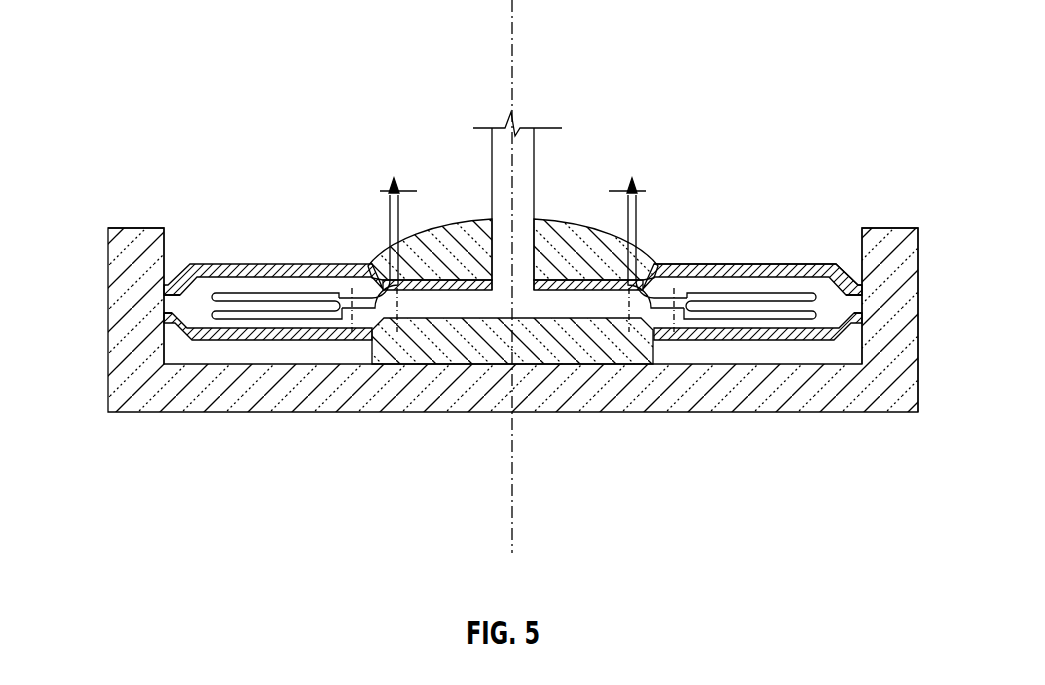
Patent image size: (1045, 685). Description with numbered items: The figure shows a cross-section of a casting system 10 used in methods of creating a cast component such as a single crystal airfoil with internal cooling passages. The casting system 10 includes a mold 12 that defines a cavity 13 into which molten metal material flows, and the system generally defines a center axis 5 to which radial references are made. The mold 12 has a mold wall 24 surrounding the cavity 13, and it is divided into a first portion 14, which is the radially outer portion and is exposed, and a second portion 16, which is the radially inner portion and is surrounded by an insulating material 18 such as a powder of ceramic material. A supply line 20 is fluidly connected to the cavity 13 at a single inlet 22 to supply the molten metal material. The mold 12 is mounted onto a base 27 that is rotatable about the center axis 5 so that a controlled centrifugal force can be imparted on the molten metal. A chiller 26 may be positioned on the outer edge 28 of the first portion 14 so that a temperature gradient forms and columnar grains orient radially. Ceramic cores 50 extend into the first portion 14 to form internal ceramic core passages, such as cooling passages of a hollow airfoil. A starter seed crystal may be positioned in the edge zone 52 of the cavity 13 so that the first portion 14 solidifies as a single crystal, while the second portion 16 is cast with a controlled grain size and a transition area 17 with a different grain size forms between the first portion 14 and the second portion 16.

The center axis 5 is at (514, 477).
The casting system 10 is at (136, 98).
The mold 12 is at (797, 266).
The cavity 13 is at (830, 297).
The first portion 14 is at (321, 324).
The second portion 16 is at (462, 315).
The transition area 17 is at (382, 320).
The insulating material 18 is at (583, 253).
The supply line 20 is at (530, 170).
The inlet 22 is at (529, 275).
The mold wall 24 is at (218, 265).
The chiller 26 is at (890, 242).
The base 27 is at (760, 398).
The outer edge 28 is at (143, 303).
The ceramic cores 50 is at (340, 296).
The edge zone 52 is at (182, 306).